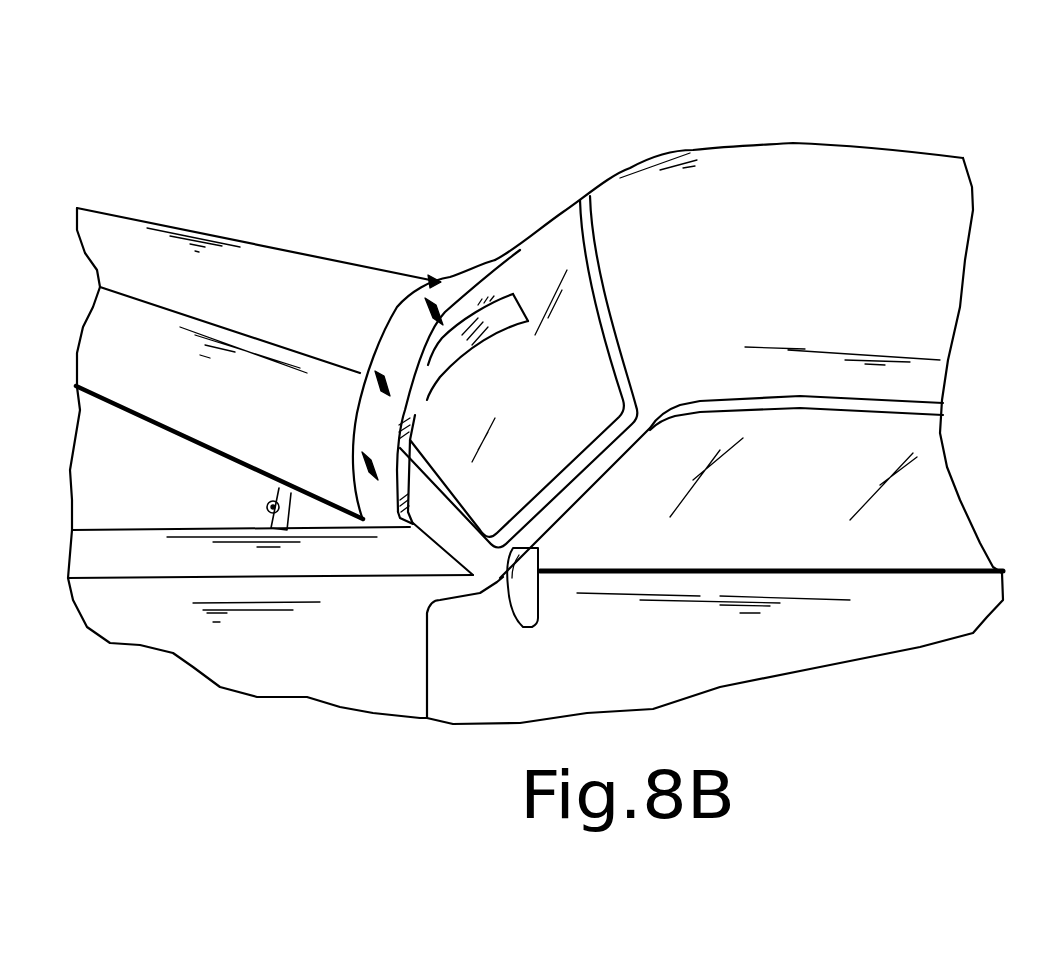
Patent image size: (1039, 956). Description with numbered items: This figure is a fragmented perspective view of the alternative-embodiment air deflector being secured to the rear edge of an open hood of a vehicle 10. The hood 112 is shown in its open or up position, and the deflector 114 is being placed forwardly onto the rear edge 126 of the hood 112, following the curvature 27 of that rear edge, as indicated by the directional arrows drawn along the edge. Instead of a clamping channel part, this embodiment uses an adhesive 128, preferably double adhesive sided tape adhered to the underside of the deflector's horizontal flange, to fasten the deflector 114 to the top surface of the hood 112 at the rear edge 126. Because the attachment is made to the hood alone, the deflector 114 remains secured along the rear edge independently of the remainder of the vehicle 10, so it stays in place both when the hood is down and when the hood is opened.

The vehicle 10 is at (801, 193).
The hood 112 is at (280, 272).
The rear edge 126 is at (354, 436).
The curvature 27 is at (393, 351).
The deflector 114 is at (458, 356).
The adhesive 128 is at (404, 530).